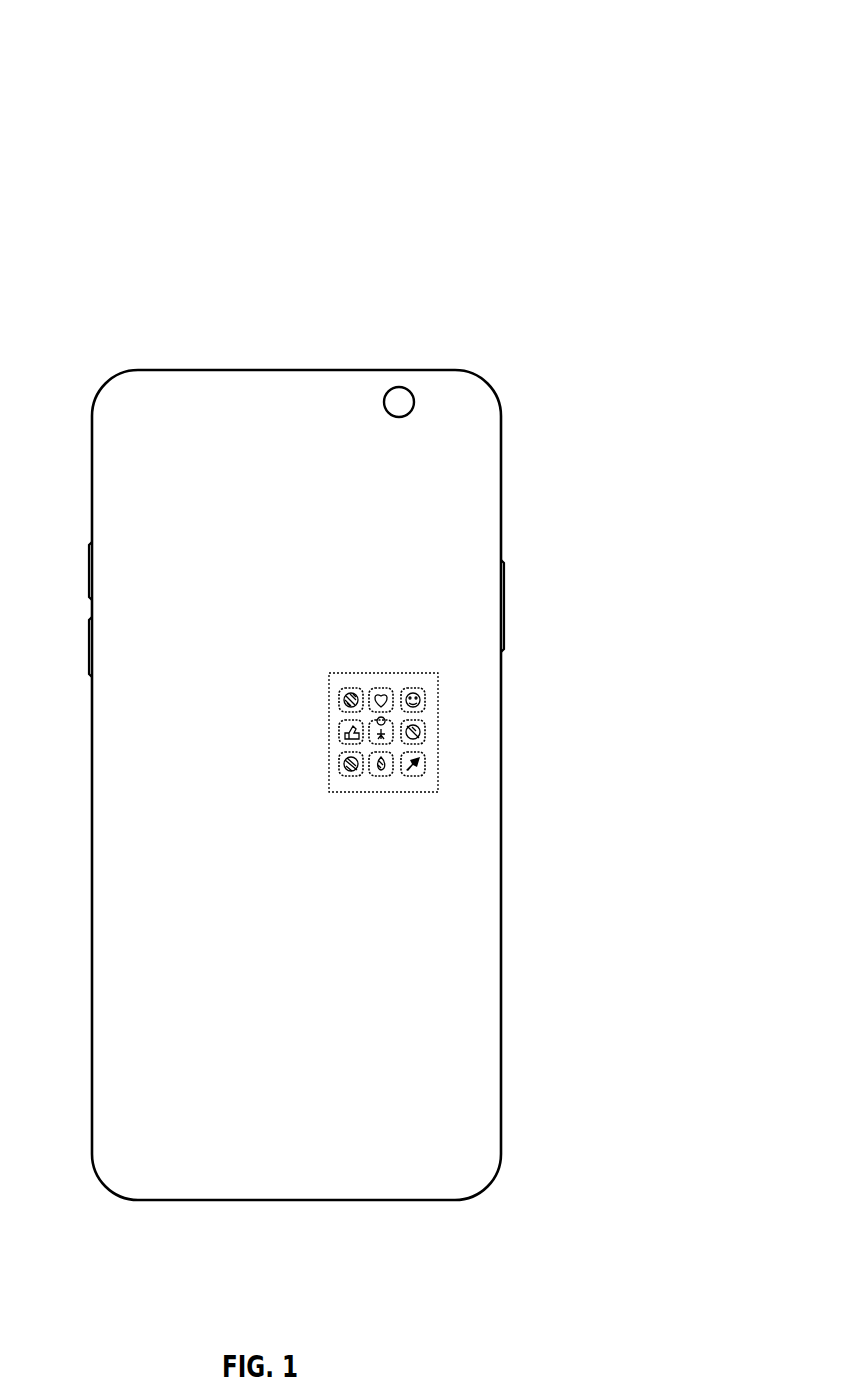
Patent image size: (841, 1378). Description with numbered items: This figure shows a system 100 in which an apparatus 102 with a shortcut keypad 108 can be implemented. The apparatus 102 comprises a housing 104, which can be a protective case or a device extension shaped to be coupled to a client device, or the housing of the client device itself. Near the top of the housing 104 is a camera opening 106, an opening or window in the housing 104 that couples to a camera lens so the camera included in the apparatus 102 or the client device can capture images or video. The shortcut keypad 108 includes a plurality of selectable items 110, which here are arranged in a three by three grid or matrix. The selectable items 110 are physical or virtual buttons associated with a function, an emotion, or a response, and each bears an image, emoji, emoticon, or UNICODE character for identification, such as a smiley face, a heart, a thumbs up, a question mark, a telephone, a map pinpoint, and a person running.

The system 100 is at (649, 78).
The apparatus 102 is at (457, 503).
The housing 104 is at (121, 456).
The camera opening 106 is at (400, 383).
The shortcut keypad 108 is at (449, 723).
The selectable items 110 is at (340, 700).